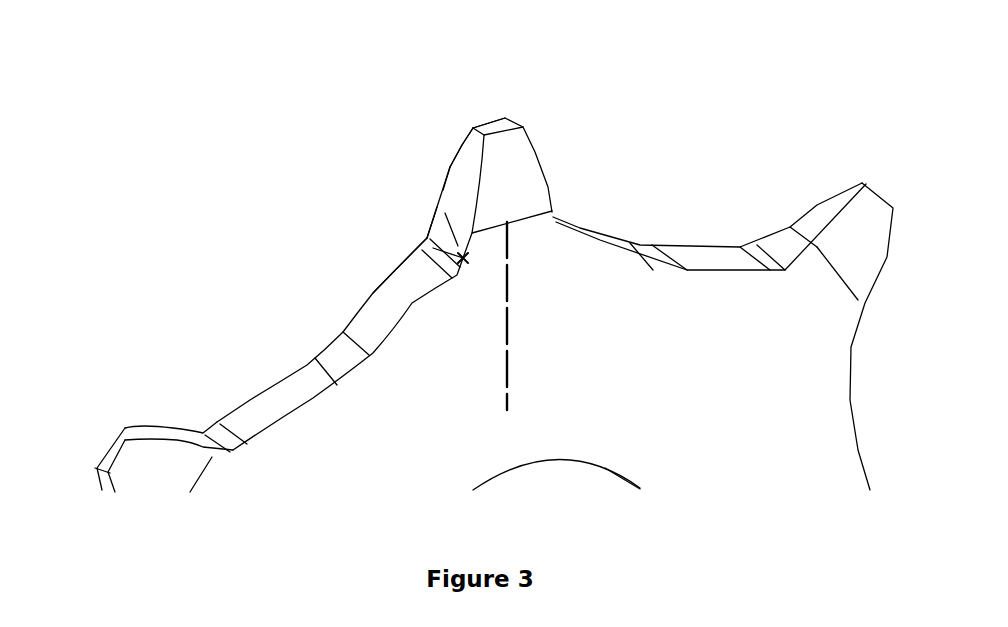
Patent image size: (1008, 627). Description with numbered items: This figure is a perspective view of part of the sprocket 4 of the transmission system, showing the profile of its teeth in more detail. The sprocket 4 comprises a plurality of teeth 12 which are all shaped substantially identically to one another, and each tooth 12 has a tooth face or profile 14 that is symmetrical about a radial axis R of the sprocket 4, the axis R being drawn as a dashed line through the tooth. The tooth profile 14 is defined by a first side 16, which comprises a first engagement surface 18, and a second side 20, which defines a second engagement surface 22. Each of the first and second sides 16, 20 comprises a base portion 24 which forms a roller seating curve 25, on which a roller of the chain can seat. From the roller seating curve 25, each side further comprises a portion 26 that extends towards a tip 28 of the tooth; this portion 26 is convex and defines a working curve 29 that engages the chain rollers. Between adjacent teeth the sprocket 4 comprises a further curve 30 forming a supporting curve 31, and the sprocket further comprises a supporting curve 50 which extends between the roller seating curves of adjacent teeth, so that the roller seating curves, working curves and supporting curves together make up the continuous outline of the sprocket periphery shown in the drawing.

The sprocket 4 is at (190, 318).
The tooth 12 is at (838, 265).
The tooth profile 14 is at (490, 177).
The first side 16 is at (452, 192).
The first engagement surface 18 is at (452, 200).
The second side 20 is at (152, 428).
The second engagement surface 22 is at (125, 428).
The base portion 24 is at (458, 245).
The roller seating curve 25 is at (462, 258).
The convex portion 26 is at (470, 152).
The tip 28 is at (505, 118).
The working curve 29 is at (457, 163).
The further curve 30 is at (408, 302).
The supporting curve 31 is at (382, 303).
The supporting curve 50 is at (325, 362).
The radial axis R is at (508, 386).